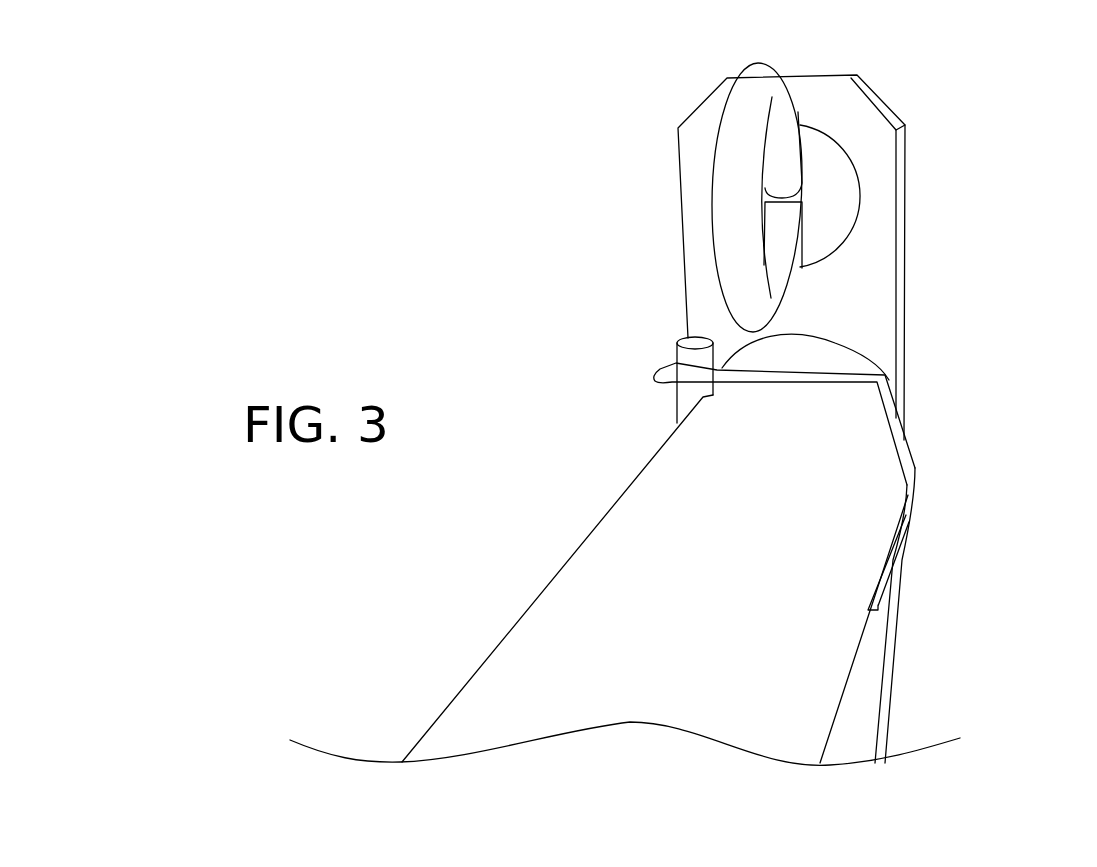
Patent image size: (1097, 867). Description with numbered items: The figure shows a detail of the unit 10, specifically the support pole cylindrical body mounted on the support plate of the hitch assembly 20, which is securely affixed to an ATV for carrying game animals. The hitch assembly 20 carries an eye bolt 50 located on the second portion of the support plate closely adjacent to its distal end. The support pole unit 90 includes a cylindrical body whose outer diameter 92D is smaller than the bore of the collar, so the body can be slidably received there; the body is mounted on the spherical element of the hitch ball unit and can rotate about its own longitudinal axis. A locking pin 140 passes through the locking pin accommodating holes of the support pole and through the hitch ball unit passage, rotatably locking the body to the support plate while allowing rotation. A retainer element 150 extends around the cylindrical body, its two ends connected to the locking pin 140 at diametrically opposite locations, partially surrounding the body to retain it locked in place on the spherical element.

The unit 10 is at (678, 405).
The hitch assembly 20 is at (897, 305).
The eye bolt 50 is at (762, 83).
The support pole unit 90 is at (782, 630).
The outer diameter of the cylindrical body 92D is at (845, 687).
The locking pin 140 is at (680, 340).
The retainer element 150 is at (912, 460).